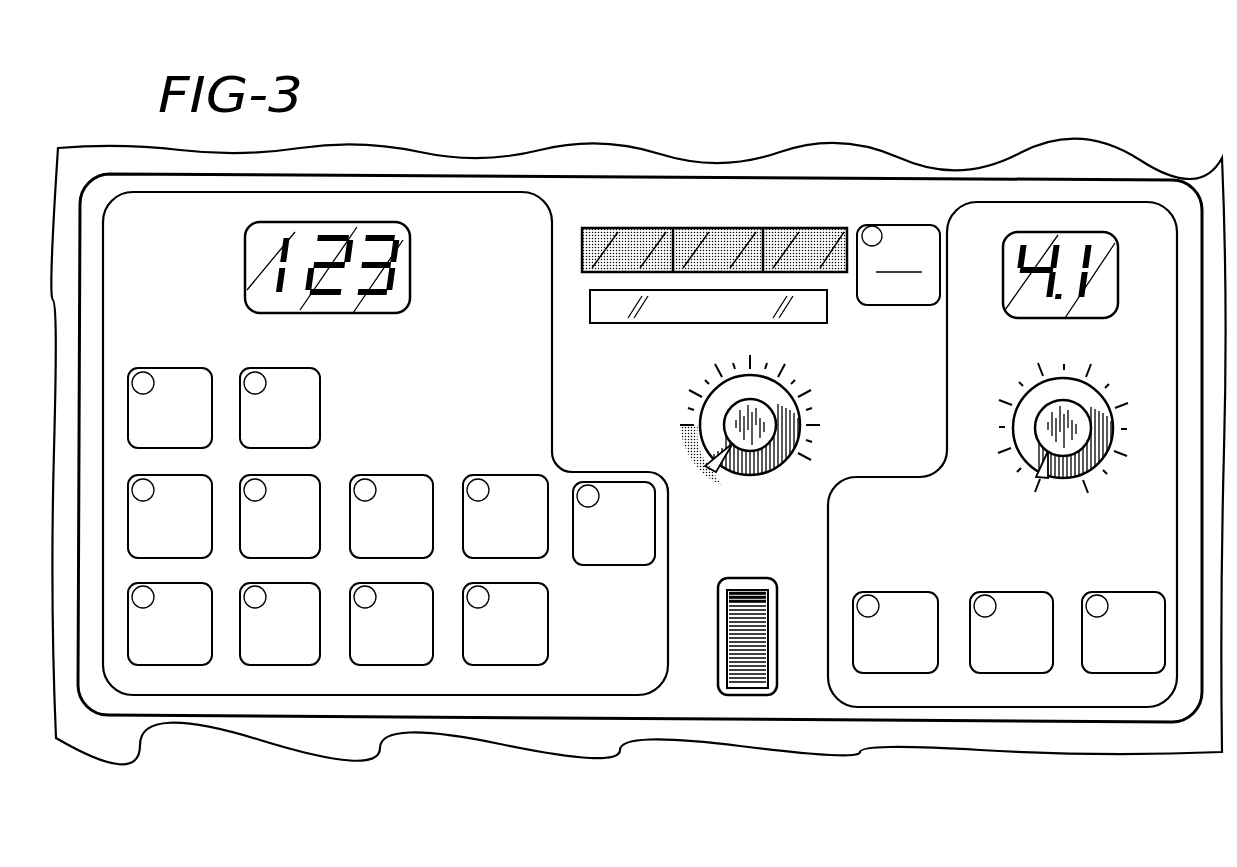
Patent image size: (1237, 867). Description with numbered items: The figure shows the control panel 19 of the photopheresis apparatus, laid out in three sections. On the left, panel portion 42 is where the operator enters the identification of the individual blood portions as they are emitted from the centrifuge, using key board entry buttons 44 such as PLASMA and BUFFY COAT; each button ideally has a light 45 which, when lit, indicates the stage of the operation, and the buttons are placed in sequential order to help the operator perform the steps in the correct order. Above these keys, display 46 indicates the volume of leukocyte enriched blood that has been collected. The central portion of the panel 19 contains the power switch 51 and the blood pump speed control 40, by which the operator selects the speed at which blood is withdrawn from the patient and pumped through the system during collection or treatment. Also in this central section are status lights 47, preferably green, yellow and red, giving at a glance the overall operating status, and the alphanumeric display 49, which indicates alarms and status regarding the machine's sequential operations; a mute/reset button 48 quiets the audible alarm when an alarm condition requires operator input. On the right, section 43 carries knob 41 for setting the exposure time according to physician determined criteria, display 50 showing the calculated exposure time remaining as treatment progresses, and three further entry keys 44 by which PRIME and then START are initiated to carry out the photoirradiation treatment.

The control panel 19 is at (653, 172).
The blood pump speed control 40 is at (763, 418).
The knob 41 is at (1078, 416).
The panel portion 42 is at (476, 390).
The exposure time section 43 is at (904, 528).
The key board entry buttons 44 is at (495, 482).
The light 45 is at (253, 372).
The display 46 is at (402, 267).
The status lights 47 is at (783, 228).
The mute/reset button 48 is at (888, 226).
The alphanumeric display 49 is at (620, 312).
The exposure time display 50 is at (1112, 267).
The power switch 51 is at (768, 612).